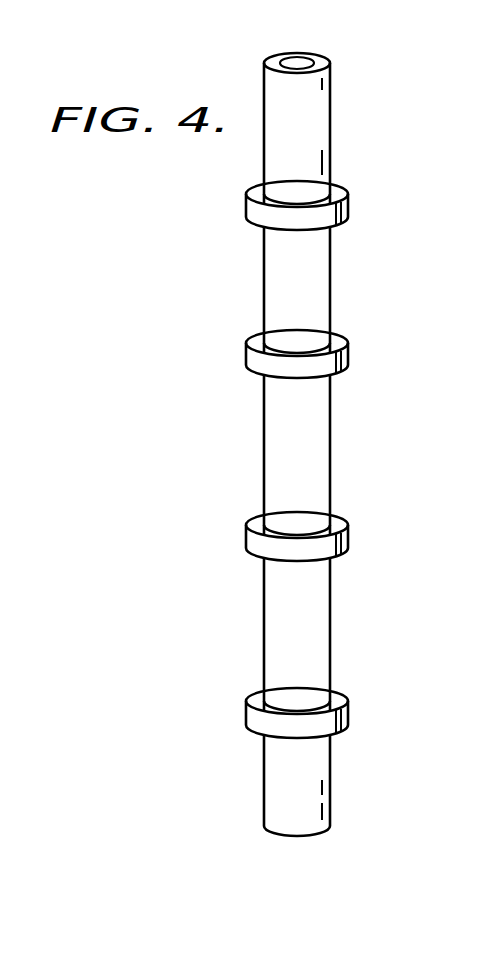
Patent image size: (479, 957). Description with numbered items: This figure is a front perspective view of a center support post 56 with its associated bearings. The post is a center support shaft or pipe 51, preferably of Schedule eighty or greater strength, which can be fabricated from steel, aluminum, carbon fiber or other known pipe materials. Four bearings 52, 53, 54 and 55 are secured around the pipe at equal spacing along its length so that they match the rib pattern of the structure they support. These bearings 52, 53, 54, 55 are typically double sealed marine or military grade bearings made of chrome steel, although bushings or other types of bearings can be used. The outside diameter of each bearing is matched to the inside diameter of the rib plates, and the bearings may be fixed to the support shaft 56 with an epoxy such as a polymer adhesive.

The center support shaft or pipe 51 is at (331, 113).
The bearing 52 is at (349, 206).
The bearing 53 is at (349, 350).
The bearing 54 is at (349, 530).
The bearing 55 is at (349, 710).
The center support post 56 is at (224, 301).